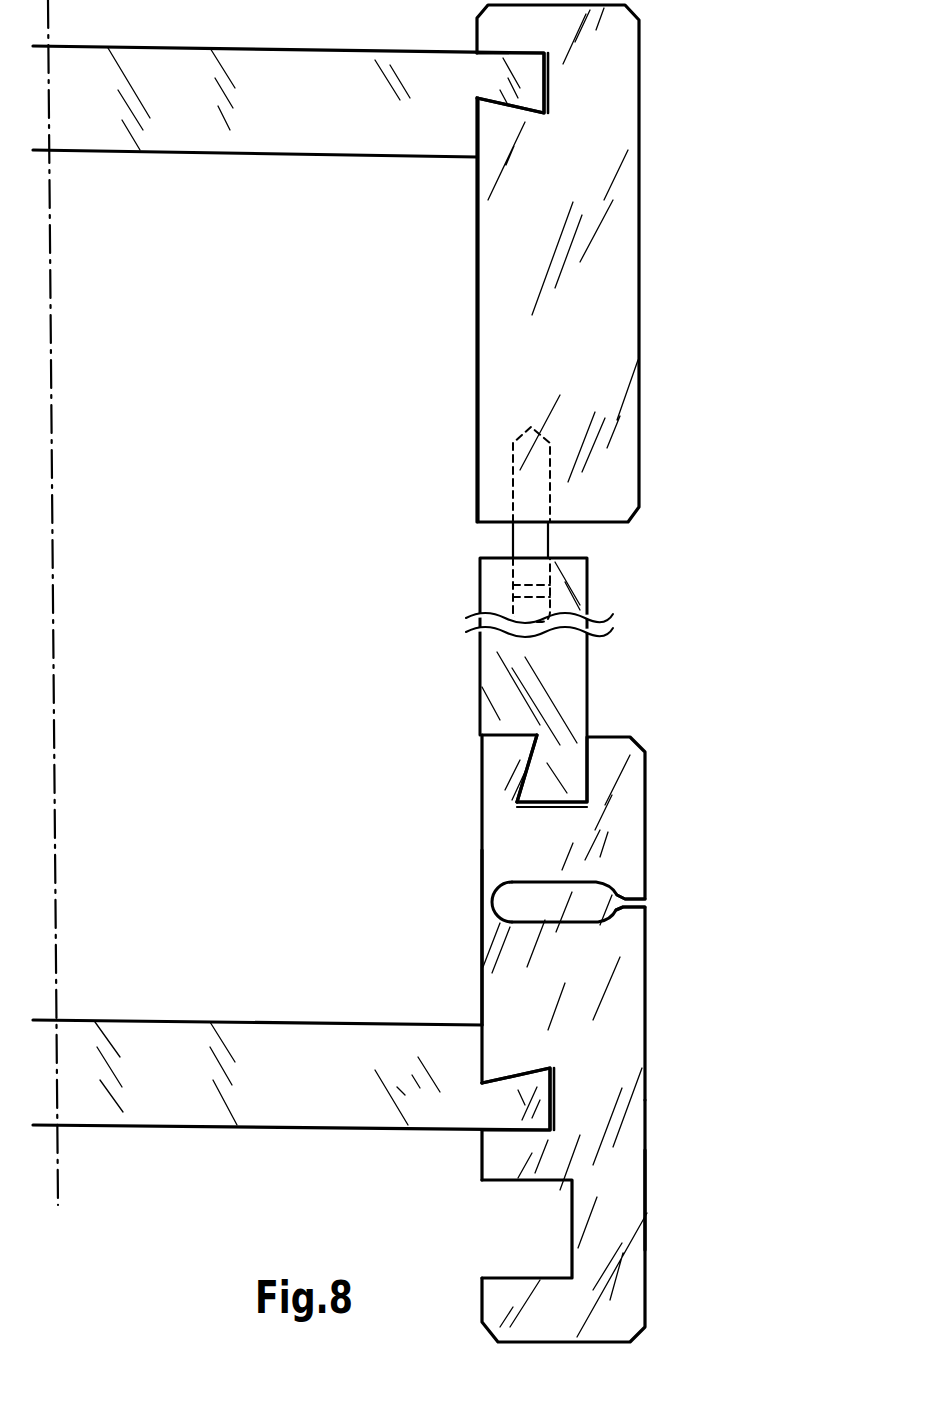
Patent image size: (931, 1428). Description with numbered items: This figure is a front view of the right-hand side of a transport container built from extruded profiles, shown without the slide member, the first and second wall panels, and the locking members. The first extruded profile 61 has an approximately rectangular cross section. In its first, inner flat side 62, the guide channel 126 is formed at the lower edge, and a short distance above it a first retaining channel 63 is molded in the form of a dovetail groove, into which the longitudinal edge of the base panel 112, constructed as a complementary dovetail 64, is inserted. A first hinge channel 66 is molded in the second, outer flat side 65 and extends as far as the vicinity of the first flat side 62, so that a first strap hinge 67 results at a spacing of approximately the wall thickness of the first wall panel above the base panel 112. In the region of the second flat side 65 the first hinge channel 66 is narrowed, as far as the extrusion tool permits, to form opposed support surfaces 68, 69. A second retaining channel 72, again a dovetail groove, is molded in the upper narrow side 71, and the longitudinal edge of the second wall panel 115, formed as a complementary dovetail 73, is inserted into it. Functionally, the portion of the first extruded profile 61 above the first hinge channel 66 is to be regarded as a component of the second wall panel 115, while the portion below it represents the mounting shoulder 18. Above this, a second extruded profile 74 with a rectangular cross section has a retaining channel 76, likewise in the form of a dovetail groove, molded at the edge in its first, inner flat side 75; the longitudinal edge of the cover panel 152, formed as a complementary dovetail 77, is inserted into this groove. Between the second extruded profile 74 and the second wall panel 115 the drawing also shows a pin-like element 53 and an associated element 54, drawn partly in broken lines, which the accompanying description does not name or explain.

The cover panel 152 is at (303, 80).
The complementary dovetail 77 is at (492, 78).
The retaining channel 76 is at (550, 92).
The first (inner) flat side 75 is at (476, 281).
The second extruded profile 74 is at (656, 295).
The pin 53 is at (530, 538).
The collar of pin 54 is at (533, 606).
The second wall panel 115 is at (499, 680).
The complementary dovetail 73 is at (551, 773).
The upper narrow side 71 is at (609, 733).
The second retaining channel 72 is at (548, 812).
The first hinge channel 66 is at (537, 896).
The first strap hinge 67 is at (492, 902).
The support surface 69 is at (630, 890).
The support surface 68 is at (633, 912).
The first (inner) flat side 62 is at (480, 977).
The mounting shoulder 18 is at (650, 988).
The first extruded profile 61 is at (668, 1040).
The base panel 112 is at (272, 1052).
The first retaining channel 63 is at (558, 1103).
The complementary dovetail 64 is at (520, 1100).
The second (outer) flat side 65 is at (648, 1190).
The guide channel 126 is at (520, 1230).